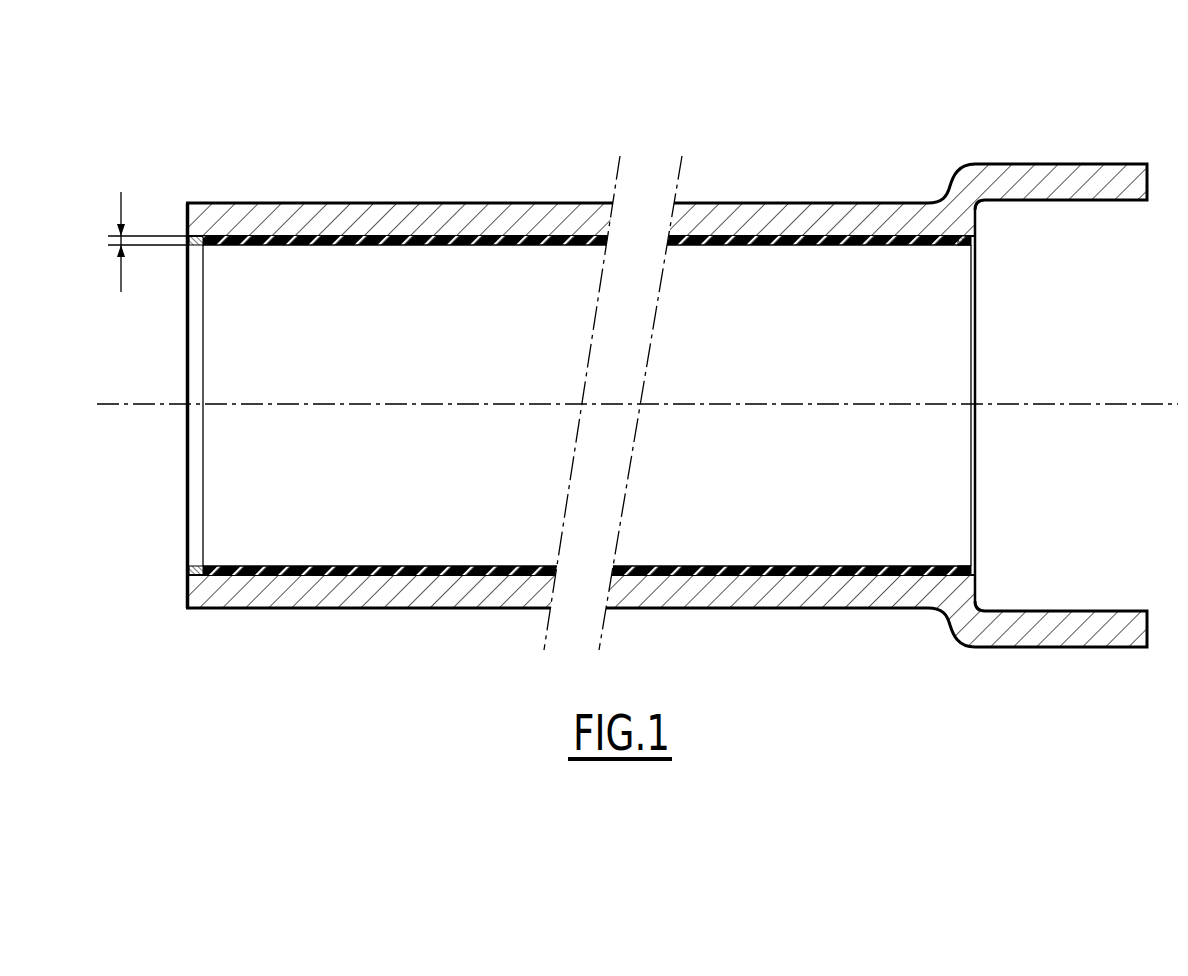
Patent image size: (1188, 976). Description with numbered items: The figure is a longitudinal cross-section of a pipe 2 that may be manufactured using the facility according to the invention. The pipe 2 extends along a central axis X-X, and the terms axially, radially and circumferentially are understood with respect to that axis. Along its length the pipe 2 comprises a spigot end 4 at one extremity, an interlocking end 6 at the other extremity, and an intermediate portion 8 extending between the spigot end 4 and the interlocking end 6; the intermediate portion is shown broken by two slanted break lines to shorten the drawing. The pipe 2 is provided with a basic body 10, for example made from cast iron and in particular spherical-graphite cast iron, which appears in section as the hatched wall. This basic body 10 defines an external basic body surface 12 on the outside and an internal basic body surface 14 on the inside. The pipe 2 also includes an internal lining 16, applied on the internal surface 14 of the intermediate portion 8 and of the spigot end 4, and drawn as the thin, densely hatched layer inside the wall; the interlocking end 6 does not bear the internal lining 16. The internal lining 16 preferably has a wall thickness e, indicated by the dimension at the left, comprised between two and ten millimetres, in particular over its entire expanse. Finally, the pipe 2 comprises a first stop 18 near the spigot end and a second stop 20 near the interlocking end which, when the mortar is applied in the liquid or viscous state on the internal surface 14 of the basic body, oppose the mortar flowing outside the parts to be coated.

The pipe 2 is at (635, 356).
The spigot end 4 is at (653, 399).
The interlocking end 6 is at (1104, 185).
The intermediate portion 8 is at (442, 223).
The basic body 10 is at (240, 593).
The external basic body surface 12 is at (448, 611).
The internal basic body surface 14 is at (587, 405).
The internal lining 16 is at (392, 246).
The first stop 18 is at (198, 247).
The second stop 20 is at (960, 247).